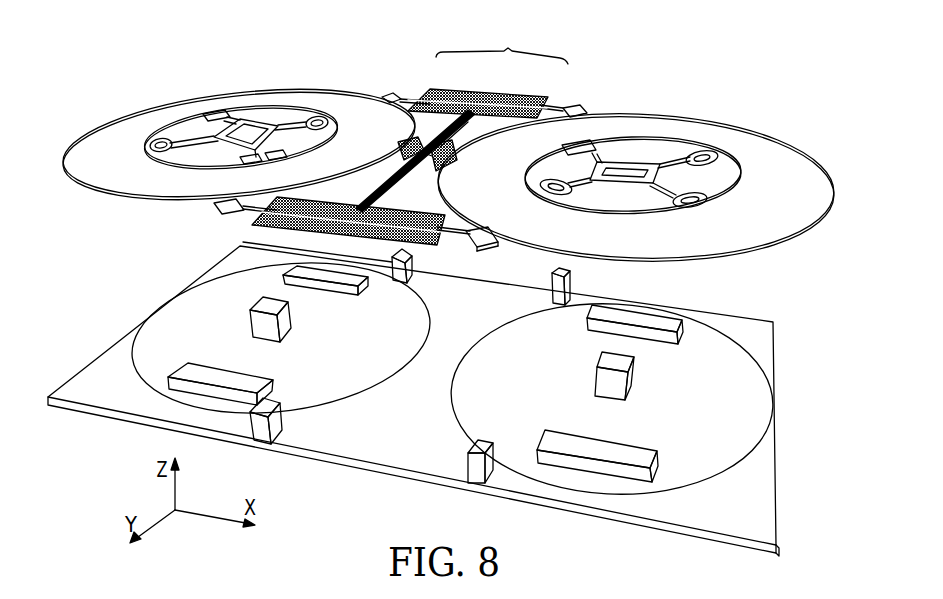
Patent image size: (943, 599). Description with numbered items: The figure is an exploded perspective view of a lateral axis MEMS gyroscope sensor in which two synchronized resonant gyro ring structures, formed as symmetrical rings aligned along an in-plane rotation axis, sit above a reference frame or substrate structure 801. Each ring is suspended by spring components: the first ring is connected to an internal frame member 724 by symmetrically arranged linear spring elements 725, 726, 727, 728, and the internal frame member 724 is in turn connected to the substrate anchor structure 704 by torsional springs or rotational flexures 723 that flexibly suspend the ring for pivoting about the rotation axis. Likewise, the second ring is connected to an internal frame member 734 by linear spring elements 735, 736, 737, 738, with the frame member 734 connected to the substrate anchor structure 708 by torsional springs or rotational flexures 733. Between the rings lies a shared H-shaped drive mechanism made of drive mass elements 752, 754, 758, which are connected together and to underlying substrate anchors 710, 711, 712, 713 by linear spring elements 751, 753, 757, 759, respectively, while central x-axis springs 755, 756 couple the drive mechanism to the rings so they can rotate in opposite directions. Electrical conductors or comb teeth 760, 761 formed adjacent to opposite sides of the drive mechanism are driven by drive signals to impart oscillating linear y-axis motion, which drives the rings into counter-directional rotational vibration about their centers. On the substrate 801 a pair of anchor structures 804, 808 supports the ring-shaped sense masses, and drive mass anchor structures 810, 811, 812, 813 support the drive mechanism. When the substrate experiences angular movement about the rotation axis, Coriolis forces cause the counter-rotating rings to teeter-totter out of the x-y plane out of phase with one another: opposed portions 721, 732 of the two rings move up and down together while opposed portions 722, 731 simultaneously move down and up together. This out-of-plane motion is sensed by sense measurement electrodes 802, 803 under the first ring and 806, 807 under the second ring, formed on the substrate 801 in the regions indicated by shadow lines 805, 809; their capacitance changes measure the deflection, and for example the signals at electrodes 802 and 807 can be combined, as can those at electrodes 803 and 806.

The substrate anchor structure 704 is at (260, 125).
The substrate anchor structure 708 is at (643, 160).
The substrate anchor 710 is at (390, 95).
The substrate anchor 711 is at (578, 106).
The substrate anchor 712 is at (214, 207).
The substrate anchor 713 is at (490, 248).
The opposed portion of ring-shaped sense mass 721 is at (114, 173).
The opposed portion of ring-shaped sense mass 722 is at (343, 126).
The torsional springs or rotational flexures 723 is at (290, 138).
The internal frame member 724 is at (217, 128).
The linear spring element 725 is at (294, 118).
The linear spring element 726 is at (230, 112).
The linear spring element 727 is at (188, 141).
The linear spring element 728 is at (245, 158).
The opposed portion of ring-shaped sense mass 731 is at (564, 230).
The opposed portion of ring-shaped sense mass 732 is at (754, 175).
The torsional springs or rotational flexures 733 is at (620, 180).
The internal frame member 734 is at (657, 162).
The linear spring element 735 is at (686, 164).
The linear spring element 736 is at (608, 153).
The linear spring element 737 is at (590, 178).
The linear spring element 738 is at (667, 193).
The linear spring element 751 is at (410, 98).
The drive mass element 752 is at (482, 103).
The linear spring element 753 is at (548, 105).
The drive mass element 754 is at (465, 124).
The central x-axis spring 755 is at (404, 160).
The central x-axis spring 756 is at (442, 168).
The linear spring element 757 is at (243, 210).
The drive mass element 758 is at (340, 230).
The linear spring element 759 is at (458, 240).
The electrical conductors or comb teeth 760 is at (502, 45).
The electrical conductors or comb teeth 761 is at (238, 245).
The reference frame or substrate structure 801 is at (768, 492).
The sense measurement electrode 802 is at (210, 373).
The sense measurement electrode 803 is at (340, 279).
The anchor structure 804 is at (252, 327).
The shadow line 805 is at (133, 370).
The sense measurement electrode 806 is at (632, 450).
The sense measurement electrode 807 is at (585, 312).
The anchor structure 808 is at (600, 377).
The shadow line 809 is at (453, 405).
The drive mass anchor structure 810 is at (397, 282).
The drive mass anchor structure 811 is at (572, 284).
The drive mass anchor structure 812 is at (284, 425).
The drive mass anchor structure 813 is at (467, 466).